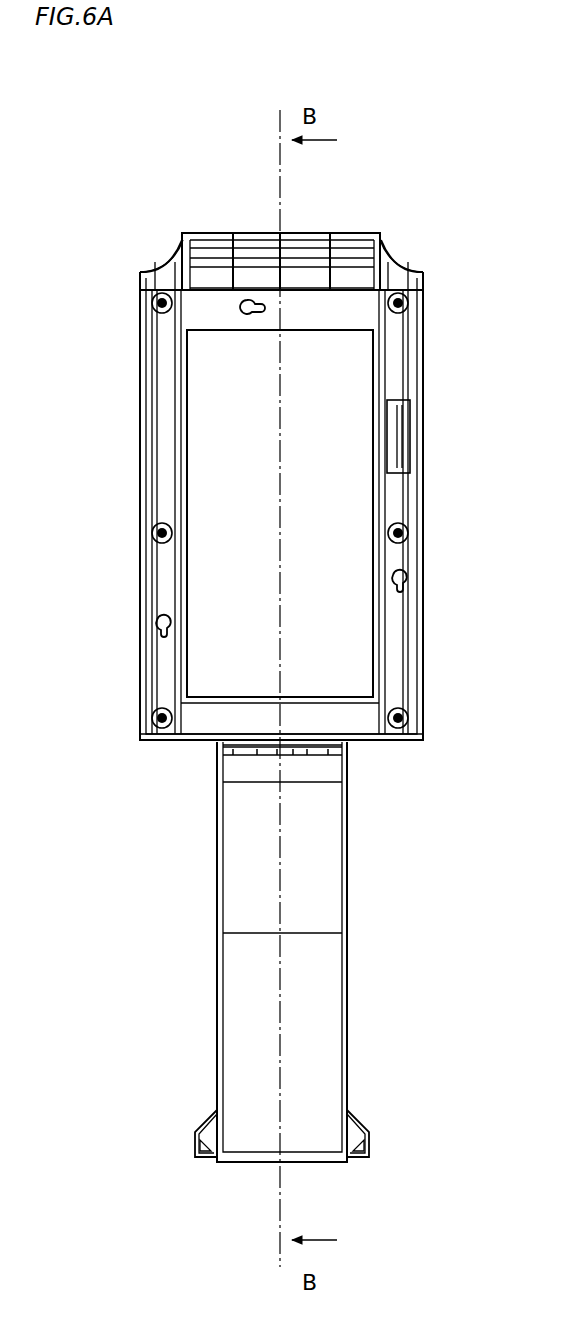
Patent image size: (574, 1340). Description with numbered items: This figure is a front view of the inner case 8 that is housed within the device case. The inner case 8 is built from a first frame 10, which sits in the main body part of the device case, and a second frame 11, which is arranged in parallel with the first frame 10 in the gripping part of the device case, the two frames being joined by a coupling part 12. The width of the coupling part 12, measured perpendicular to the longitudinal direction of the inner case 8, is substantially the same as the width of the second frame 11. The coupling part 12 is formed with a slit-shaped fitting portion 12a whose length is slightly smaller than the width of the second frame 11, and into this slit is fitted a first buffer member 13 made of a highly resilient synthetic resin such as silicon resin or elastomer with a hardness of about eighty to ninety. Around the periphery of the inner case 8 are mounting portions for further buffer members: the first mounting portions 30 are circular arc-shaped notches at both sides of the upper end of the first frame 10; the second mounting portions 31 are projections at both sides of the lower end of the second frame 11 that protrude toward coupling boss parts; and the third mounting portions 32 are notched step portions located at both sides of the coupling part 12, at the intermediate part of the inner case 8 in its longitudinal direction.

The inner case 8 is at (238, 228).
The first frame 10 is at (428, 493).
The second frame 11 is at (356, 897).
The coupling part 12 is at (320, 758).
The slit-shaped fitting portion 12a is at (293, 755).
The first buffer member 13 is at (255, 755).
The first mounting portions 30 is at (172, 264).
The second mounting portions 31 is at (194, 1140).
The third mounting portions 32 is at (214, 744).